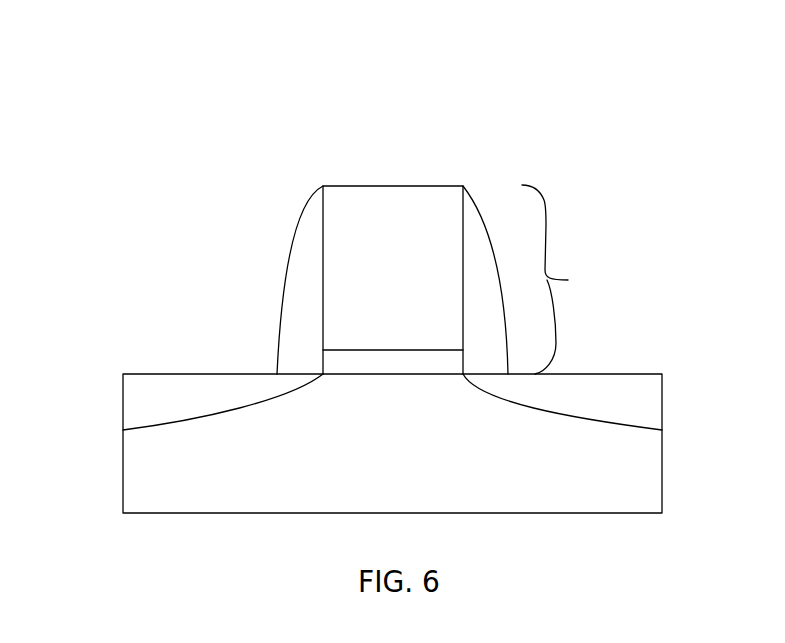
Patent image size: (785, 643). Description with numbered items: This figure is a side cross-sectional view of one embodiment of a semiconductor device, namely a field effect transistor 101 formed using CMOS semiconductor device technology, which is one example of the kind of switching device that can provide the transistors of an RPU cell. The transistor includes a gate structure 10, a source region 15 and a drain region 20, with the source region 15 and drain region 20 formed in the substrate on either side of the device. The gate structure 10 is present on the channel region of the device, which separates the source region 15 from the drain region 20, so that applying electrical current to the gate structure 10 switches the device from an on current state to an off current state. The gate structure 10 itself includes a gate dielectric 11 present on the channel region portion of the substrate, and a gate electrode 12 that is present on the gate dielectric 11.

The field effect transistor 101 is at (537, 89).
The gate structure 10 is at (568, 280).
The gate dielectric 11 is at (357, 363).
The gate electrode 12 is at (385, 233).
The source region 15 is at (171, 392).
The drain region 20 is at (645, 407).